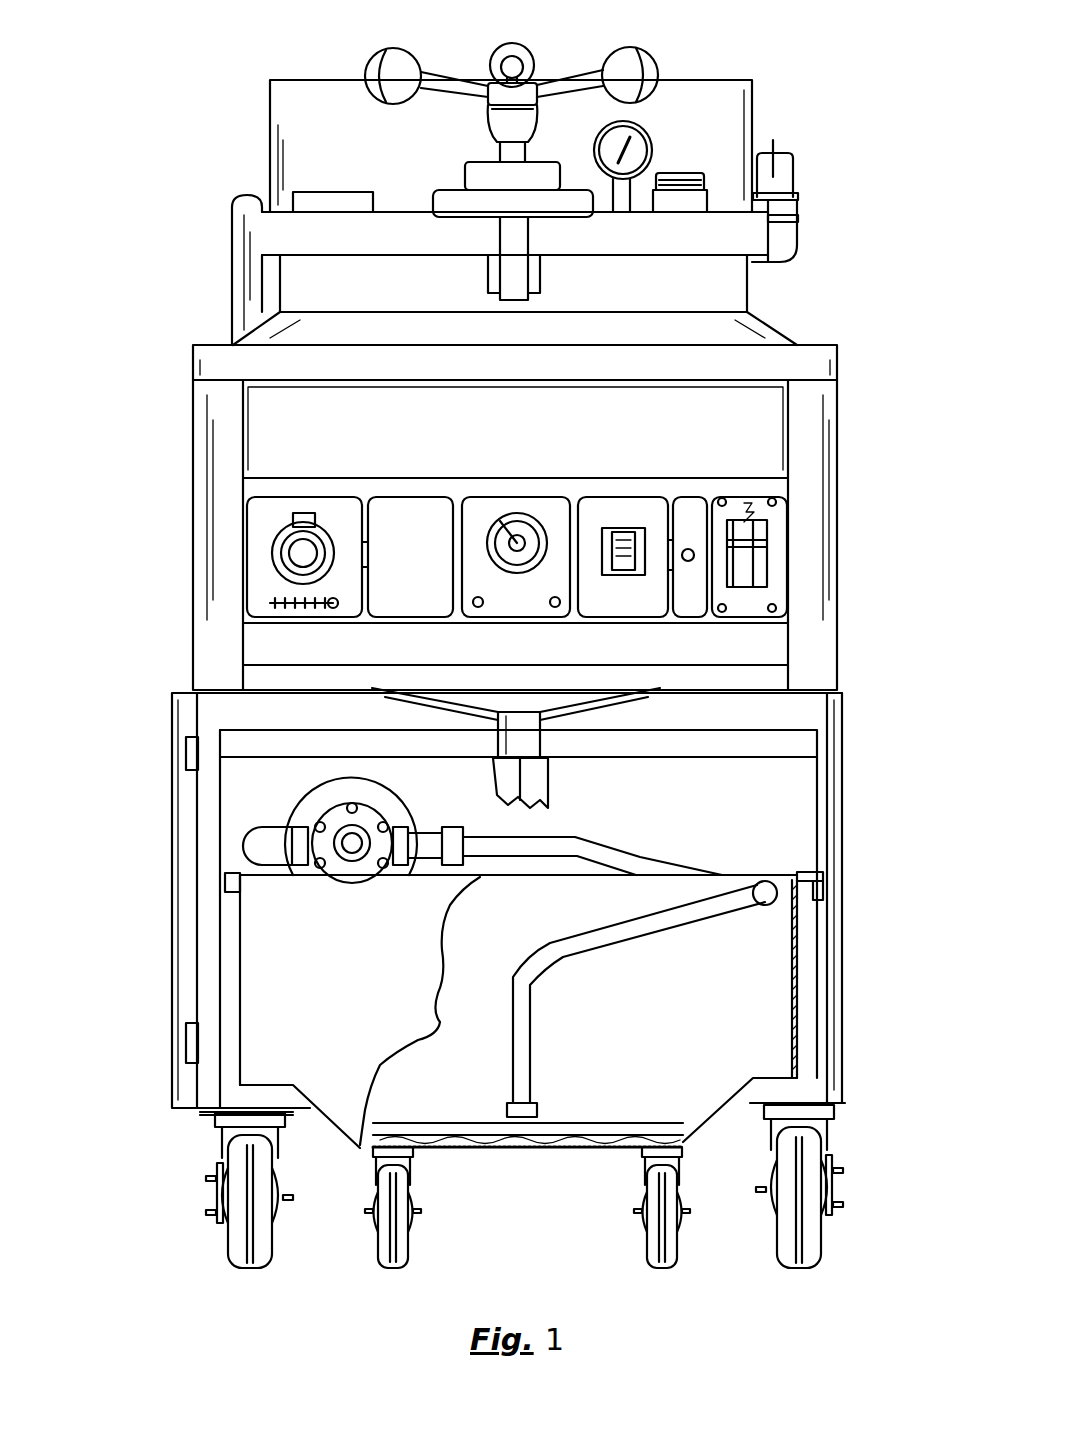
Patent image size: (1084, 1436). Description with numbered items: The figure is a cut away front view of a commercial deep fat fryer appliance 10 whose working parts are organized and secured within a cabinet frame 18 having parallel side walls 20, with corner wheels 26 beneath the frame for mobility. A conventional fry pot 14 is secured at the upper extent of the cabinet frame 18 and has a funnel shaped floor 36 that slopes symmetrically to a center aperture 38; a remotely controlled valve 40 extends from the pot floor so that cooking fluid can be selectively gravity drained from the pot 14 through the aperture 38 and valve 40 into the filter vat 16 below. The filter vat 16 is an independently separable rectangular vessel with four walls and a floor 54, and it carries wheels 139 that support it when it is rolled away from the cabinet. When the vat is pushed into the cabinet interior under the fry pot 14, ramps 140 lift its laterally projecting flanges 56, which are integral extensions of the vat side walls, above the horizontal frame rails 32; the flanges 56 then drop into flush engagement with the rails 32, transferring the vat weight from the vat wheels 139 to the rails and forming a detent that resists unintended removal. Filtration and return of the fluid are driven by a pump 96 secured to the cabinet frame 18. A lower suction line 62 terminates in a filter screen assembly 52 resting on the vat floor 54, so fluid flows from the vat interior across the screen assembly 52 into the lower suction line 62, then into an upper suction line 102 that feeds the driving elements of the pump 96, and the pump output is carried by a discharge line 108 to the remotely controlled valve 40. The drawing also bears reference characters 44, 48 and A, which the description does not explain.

The deep fat fryer appliance 10 is at (193, 238).
The fry pot 14 is at (620, 693).
The filter vat 16 is at (737, 883).
The cabinet frame 18 is at (827, 745).
The side walls 20 is at (845, 787).
The corner wheels 26 is at (257, 1260).
The horizontal frame rails 32 is at (823, 890).
The funnel shaped floor 36 is at (393, 697).
The center aperture 38 is at (507, 705).
The remotely controlled valve 40 is at (524, 750).
The vent pipe 44 is at (753, 217).
The lid handwheel 48 is at (533, 88).
The filter screen assembly 52 is at (588, 1138).
The floor 54 is at (543, 1150).
The laterally projecting flanges 56 is at (813, 870).
The lower suction line 62 is at (662, 923).
The pump 96 is at (333, 810).
The upper suction line 102 is at (628, 856).
The discharge line 108 is at (243, 836).
The vat wheels 139 is at (400, 1258).
The ramps 140 is at (243, 882).
The pan wall A is at (815, 913).